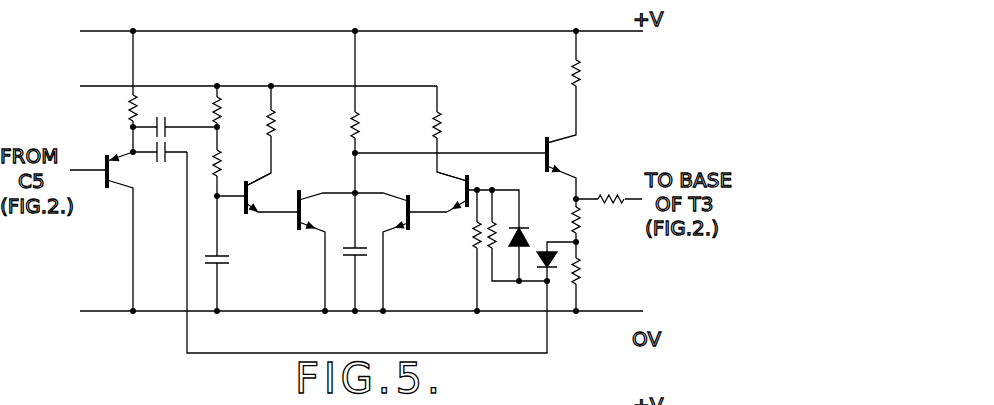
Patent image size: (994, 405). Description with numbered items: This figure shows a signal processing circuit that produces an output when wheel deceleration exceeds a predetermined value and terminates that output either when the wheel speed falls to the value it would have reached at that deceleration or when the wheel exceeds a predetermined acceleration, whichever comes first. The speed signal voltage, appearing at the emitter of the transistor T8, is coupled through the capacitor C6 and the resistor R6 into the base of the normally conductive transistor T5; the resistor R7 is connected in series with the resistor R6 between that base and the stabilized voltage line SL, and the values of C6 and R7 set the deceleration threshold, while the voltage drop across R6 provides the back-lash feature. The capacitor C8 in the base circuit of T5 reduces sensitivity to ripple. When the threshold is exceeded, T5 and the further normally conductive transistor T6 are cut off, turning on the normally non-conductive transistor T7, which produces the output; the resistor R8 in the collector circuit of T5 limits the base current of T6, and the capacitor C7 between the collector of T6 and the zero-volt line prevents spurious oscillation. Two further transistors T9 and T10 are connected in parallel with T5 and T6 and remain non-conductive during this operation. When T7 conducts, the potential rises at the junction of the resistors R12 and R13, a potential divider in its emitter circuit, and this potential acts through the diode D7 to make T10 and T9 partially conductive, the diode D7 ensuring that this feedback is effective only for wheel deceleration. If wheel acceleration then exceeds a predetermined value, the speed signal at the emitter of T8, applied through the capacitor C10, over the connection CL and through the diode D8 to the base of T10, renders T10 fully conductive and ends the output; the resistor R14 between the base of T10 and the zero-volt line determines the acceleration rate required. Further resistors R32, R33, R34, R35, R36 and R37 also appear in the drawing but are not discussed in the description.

The stabilized voltage line SL is at (100, 85).
The connection CL is at (362, 355).
The resistor R32 is at (109, 91).
The capacitor C6 is at (155, 123).
The capacitor C10 is at (165, 163).
The transistor T8 is at (110, 171).
The resistor R7 is at (231, 118).
The resistor R6 is at (231, 173).
The capacitor C8 is at (231, 262).
The resistor R8 is at (276, 136).
The resistor R33 is at (376, 139).
The capacitor C7 is at (340, 250).
The resistor R34 is at (458, 133).
The resistor R35 is at (585, 87).
The transistor T5 is at (248, 195).
The transistor T6 is at (303, 212).
The transistor T9 is at (406, 212).
The transistor T10 is at (447, 197).
The transistor T7 is at (550, 156).
The resistor R14 is at (456, 250).
The resistor R36 is at (507, 252).
The diode D8 is at (522, 228).
The diode D7 is at (538, 254).
The resistor R37 is at (609, 188).
The resistor R13 is at (597, 228).
The resistor R12 is at (597, 284).